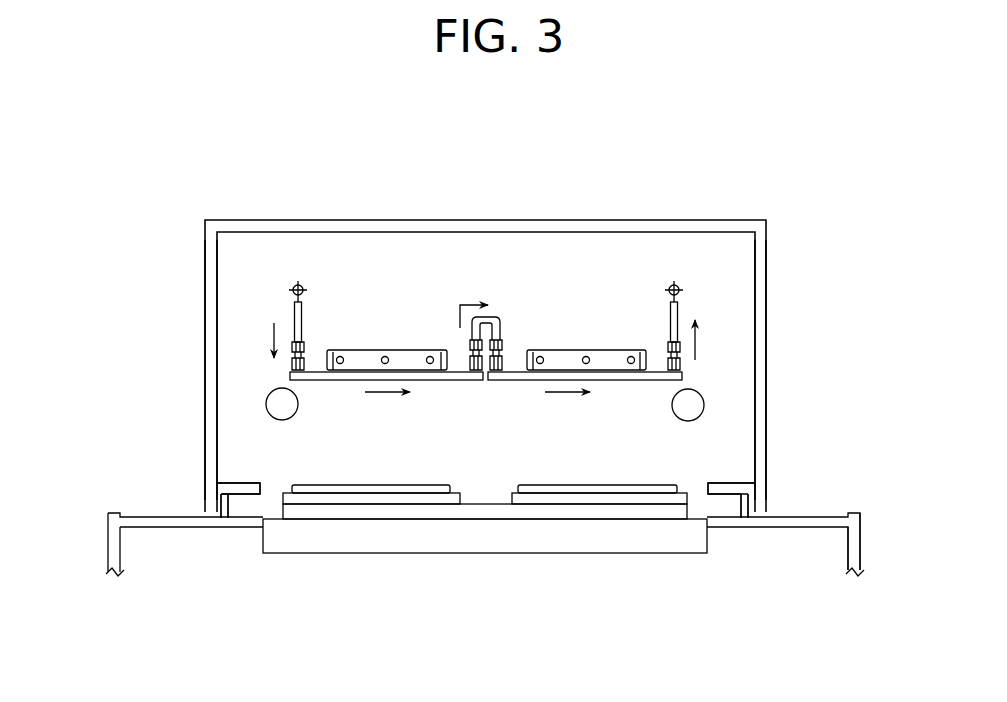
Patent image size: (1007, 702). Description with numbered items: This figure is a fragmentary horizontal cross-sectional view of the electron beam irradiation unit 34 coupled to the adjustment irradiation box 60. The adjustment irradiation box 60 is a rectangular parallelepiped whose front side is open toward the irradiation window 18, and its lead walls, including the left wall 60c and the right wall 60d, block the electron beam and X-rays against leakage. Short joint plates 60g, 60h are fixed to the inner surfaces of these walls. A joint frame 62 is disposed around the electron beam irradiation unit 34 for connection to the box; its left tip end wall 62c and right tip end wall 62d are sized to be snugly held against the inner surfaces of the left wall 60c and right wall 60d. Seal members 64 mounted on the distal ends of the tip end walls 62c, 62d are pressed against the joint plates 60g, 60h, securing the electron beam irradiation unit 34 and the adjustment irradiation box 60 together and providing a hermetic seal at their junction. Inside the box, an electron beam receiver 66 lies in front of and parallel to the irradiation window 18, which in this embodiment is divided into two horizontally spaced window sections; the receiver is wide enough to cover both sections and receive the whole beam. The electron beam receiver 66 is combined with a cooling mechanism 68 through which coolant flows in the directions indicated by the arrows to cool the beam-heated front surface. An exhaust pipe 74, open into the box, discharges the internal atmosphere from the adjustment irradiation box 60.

The adjustment irradiation box 60 is at (439, 198).
The left wall 60c is at (205, 346).
The right wall 60d is at (766, 328).
The joint plate 60g is at (235, 482).
The joint plate 60h is at (727, 481).
The seal member 64 is at (218, 483).
The joint frame 62 is at (862, 545).
The left tip end wall 62c is at (231, 497).
The right tip end wall 62d is at (742, 497).
The electron beam irradiation unit 34 is at (878, 572).
The irradiation window 18 is at (382, 485).
The electron beam receiver 66 is at (455, 381).
The cooling mechanism 68 is at (307, 317).
The exhaust pipe 74 is at (299, 416).